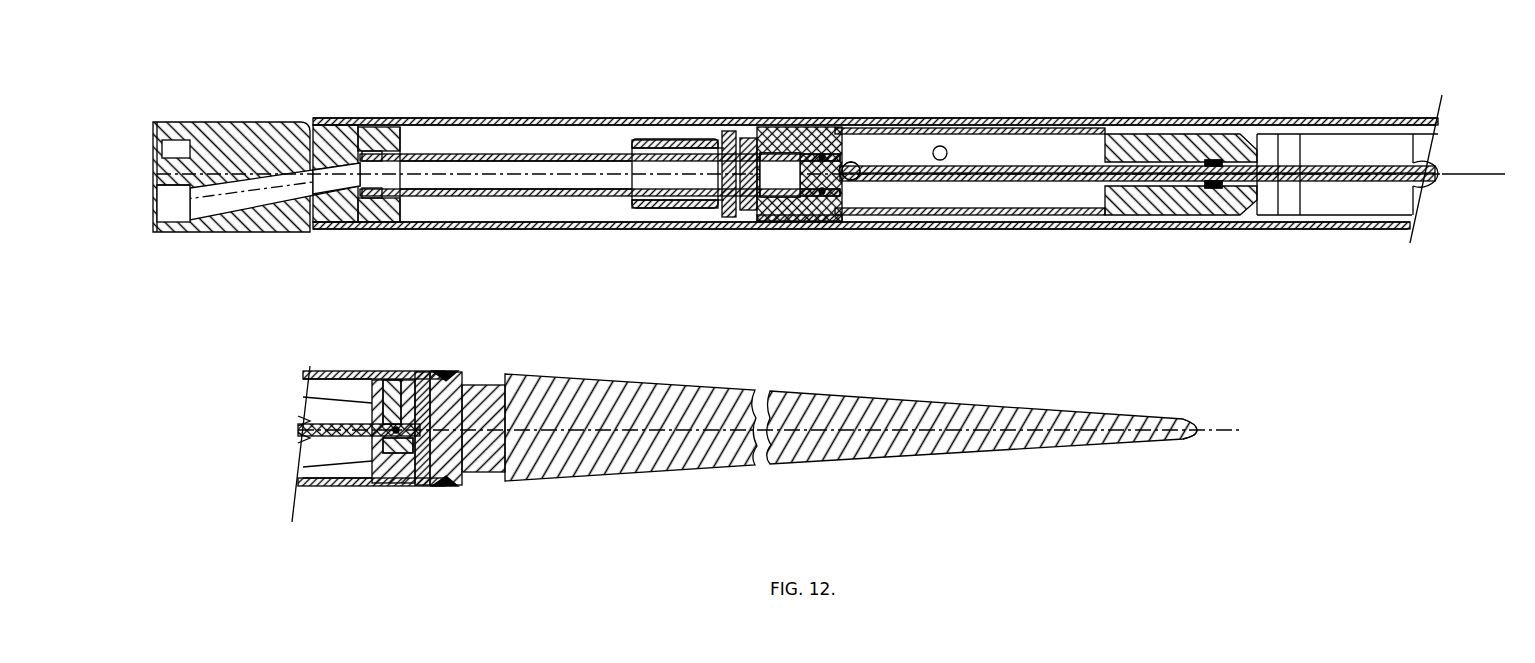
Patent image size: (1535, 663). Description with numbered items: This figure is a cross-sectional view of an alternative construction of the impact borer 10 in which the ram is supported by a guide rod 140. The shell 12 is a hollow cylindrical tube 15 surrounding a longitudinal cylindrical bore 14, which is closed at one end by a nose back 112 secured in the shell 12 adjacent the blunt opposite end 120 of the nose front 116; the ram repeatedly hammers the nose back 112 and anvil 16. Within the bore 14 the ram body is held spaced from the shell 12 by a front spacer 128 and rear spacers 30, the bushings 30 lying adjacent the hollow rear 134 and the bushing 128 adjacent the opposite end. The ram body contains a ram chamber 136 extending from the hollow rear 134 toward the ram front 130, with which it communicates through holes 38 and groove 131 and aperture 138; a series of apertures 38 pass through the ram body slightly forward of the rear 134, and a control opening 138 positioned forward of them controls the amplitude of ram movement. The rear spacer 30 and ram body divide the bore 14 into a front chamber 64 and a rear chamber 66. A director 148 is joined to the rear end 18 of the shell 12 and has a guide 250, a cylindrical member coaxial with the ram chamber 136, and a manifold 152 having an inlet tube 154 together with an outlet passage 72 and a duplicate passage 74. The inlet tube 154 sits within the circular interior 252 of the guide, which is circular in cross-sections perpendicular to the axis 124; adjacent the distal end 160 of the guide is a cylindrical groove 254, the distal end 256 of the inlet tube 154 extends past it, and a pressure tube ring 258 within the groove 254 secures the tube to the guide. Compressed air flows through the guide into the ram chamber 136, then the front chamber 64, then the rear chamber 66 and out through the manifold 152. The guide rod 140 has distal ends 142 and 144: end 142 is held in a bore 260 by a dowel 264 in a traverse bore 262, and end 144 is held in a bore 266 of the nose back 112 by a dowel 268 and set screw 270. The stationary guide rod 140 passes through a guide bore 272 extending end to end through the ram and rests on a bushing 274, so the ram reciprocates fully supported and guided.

The impact borer 10 is at (471, 71).
The shell 12 is at (548, 117).
The longitudinal cylindrical bore 14 is at (582, 140).
The hollow cylindrical tube 15 is at (848, 122).
The anvil 16 is at (440, 484).
The rear end 18 is at (305, 118).
The rear spacers 30 is at (735, 150).
The apertures 38 is at (868, 157).
The front chamber 64 is at (360, 392).
The rear chamber 66 is at (430, 133).
The outlet passage 72 is at (182, 143).
The duplicate passage 74 is at (173, 203).
The nose back 112 is at (423, 380).
The nose front 116 is at (803, 393).
The blunt opposite end 120 is at (375, 453).
The axis 124 is at (1213, 434).
The front spacer 128 is at (1212, 160).
The ram front 130 is at (323, 467).
The groove 131 is at (1310, 130).
The hollow rear 134 is at (737, 140).
The ram chamber 136 is at (1033, 147).
The control opening 138 is at (940, 147).
The guide rod 140 is at (1033, 177).
The distal end 142 is at (763, 229).
The distal end 144 is at (457, 485).
The director 148 is at (228, 122).
The manifold 152 is at (258, 122).
The inlet tube 154 is at (480, 168).
The distal end 160 is at (840, 183).
The guide 250 is at (660, 140).
The interior 252 is at (797, 140).
The cylindrical groove 254 is at (723, 200).
The distal end 256 is at (768, 190).
The pressure tube ring 258 is at (713, 163).
The bore 260 is at (863, 177).
The traverse bore 262 is at (823, 150).
The dowel 264 is at (822, 191).
The bore 266 is at (423, 443).
The dowel 268 is at (393, 437).
The set screw 270 is at (393, 380).
The guide bore 272 is at (1208, 186).
The bushing 274 is at (1223, 190).